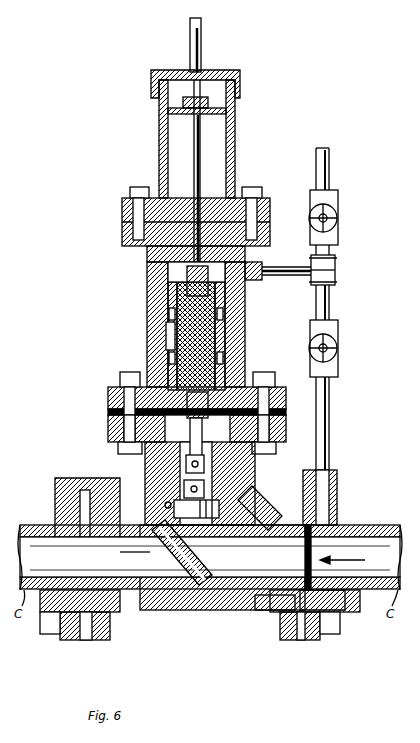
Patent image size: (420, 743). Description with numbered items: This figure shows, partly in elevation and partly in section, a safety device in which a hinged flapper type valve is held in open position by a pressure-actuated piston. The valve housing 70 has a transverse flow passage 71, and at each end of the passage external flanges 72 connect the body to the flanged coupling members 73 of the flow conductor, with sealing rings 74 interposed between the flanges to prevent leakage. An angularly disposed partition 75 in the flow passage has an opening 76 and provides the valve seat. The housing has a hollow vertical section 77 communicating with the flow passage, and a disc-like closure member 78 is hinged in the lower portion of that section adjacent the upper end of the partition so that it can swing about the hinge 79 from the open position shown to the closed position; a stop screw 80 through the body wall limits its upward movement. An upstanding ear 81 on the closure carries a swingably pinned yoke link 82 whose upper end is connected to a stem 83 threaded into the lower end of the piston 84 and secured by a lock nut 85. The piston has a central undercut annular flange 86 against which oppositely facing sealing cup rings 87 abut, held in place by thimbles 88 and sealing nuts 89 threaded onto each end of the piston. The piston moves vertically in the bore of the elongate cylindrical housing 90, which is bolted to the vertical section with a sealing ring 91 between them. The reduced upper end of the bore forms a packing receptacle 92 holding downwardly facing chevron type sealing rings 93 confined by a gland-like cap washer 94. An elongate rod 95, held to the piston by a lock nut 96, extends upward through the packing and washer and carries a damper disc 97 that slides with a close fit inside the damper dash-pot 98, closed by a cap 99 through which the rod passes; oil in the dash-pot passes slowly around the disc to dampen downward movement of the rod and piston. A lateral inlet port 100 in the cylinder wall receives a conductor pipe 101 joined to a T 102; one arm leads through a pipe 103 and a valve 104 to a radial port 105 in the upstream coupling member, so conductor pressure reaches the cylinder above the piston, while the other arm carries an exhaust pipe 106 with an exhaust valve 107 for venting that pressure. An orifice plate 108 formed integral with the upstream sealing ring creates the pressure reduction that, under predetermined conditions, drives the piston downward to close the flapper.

The valve housing 70 is at (166, 608).
The flow passage 71 is at (254, 610).
The external flanges 72 is at (103, 630).
The flanged coupling members 73 is at (76, 632).
The sealing rings 74 is at (58, 630).
The partition 75 is at (215, 610).
The opening 76 is at (186, 568).
The vertical section 77 is at (150, 478).
The closure member 78 is at (225, 546).
The hinge 79 is at (156, 548).
The stop screw 80 is at (258, 488).
The ear 81 is at (204, 490).
The yoke link 82 is at (186, 476).
The stem 83 is at (192, 446).
The piston 84 is at (200, 345).
The lock nut 85 is at (205, 418).
The annular flange 86 is at (166, 334).
The sealing cup rings 87 is at (170, 312).
The thimbles 88 is at (168, 300).
The sealing nuts 89 is at (170, 280).
The cylindrical housing 90 is at (245, 320).
The sealing ring 91 is at (112, 430).
The packing receptacle 92 is at (147, 258).
The chevron type sealing rings 93 is at (262, 256).
The cap washer 94 is at (252, 188).
The rod 95 is at (194, 162).
The lock nut 96 is at (228, 278).
The damper disc 97 is at (175, 114).
The damper dash-pot 98 is at (235, 126).
The cap 99 is at (212, 70).
The inlet port 100 is at (302, 278).
The conductor pipe 101 is at (332, 264).
The T 102 is at (332, 276).
The pipe 103 is at (330, 310).
The valve 104 is at (338, 372).
The port 105 is at (334, 470).
The exhaust pipe 106 is at (330, 152).
The exhaust valve 107 is at (338, 196).
The orifice plate 108 is at (320, 570).